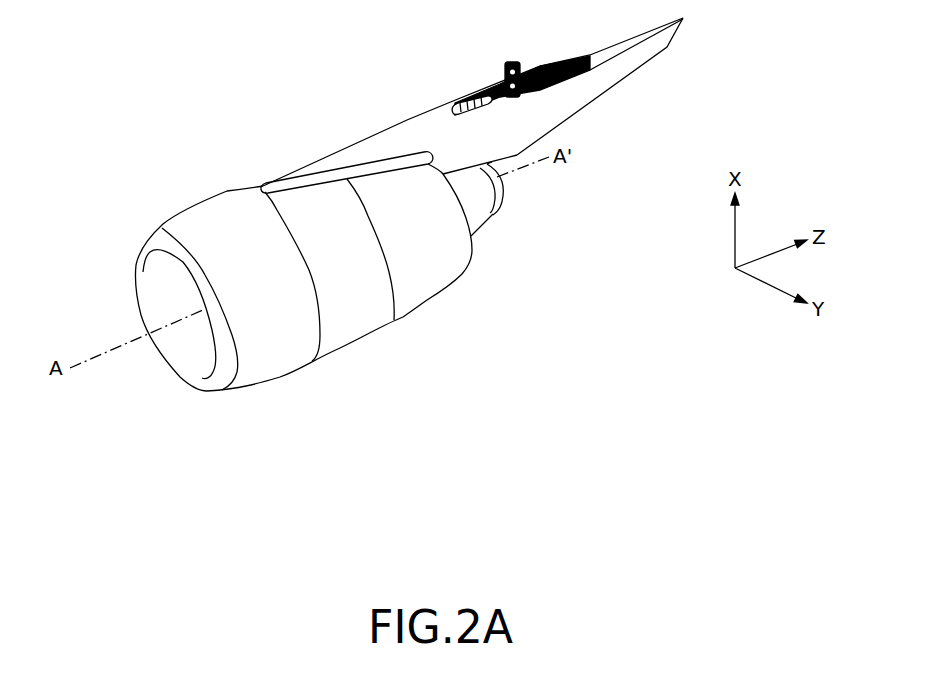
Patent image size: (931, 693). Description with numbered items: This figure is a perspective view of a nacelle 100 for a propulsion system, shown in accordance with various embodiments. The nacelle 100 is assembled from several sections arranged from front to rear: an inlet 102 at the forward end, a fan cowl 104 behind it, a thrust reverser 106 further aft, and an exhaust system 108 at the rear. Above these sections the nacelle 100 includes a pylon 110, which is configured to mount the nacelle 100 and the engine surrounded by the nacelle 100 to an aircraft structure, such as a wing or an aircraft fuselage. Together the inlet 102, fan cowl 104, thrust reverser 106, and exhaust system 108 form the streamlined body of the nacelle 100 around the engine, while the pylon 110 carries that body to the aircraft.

The nacelle 100 is at (142, 155).
The inlet 102 is at (278, 355).
The fan cowl 104 is at (362, 312).
The thrust reverser 106 is at (428, 276).
The exhaust system 108 is at (480, 212).
The pylon 110 is at (561, 100).